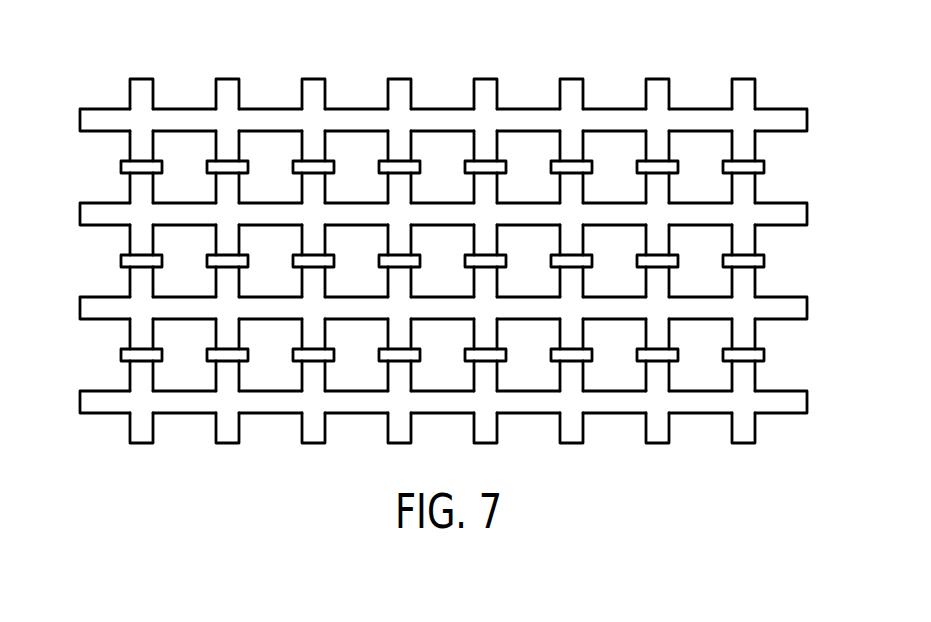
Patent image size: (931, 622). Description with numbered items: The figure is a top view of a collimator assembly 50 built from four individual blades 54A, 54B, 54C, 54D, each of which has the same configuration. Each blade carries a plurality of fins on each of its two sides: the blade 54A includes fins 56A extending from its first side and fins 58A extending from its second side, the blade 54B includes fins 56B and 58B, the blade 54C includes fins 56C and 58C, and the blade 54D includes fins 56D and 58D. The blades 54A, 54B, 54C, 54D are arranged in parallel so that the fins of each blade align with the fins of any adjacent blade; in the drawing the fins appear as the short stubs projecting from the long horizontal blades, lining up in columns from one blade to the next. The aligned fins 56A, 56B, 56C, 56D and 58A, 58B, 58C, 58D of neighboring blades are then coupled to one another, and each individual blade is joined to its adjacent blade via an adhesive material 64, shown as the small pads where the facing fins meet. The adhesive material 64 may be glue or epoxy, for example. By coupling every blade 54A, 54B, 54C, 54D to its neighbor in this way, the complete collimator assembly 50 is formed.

The collimator assembly 50 is at (106, 46).
The blade 54A is at (80, 120).
The blade 54B is at (80, 214).
The blade 54C is at (80, 308).
The blade 54D is at (80, 402).
The fins 56A is at (229, 143).
The fins 56B is at (229, 237).
The fins 56C is at (229, 331).
The fins 56D is at (147, 437).
The fins 58A is at (145, 84).
The fins 58B is at (229, 184).
The fins 58C is at (229, 278).
The fins 58D is at (229, 372).
The adhesive material 64 is at (121, 164).